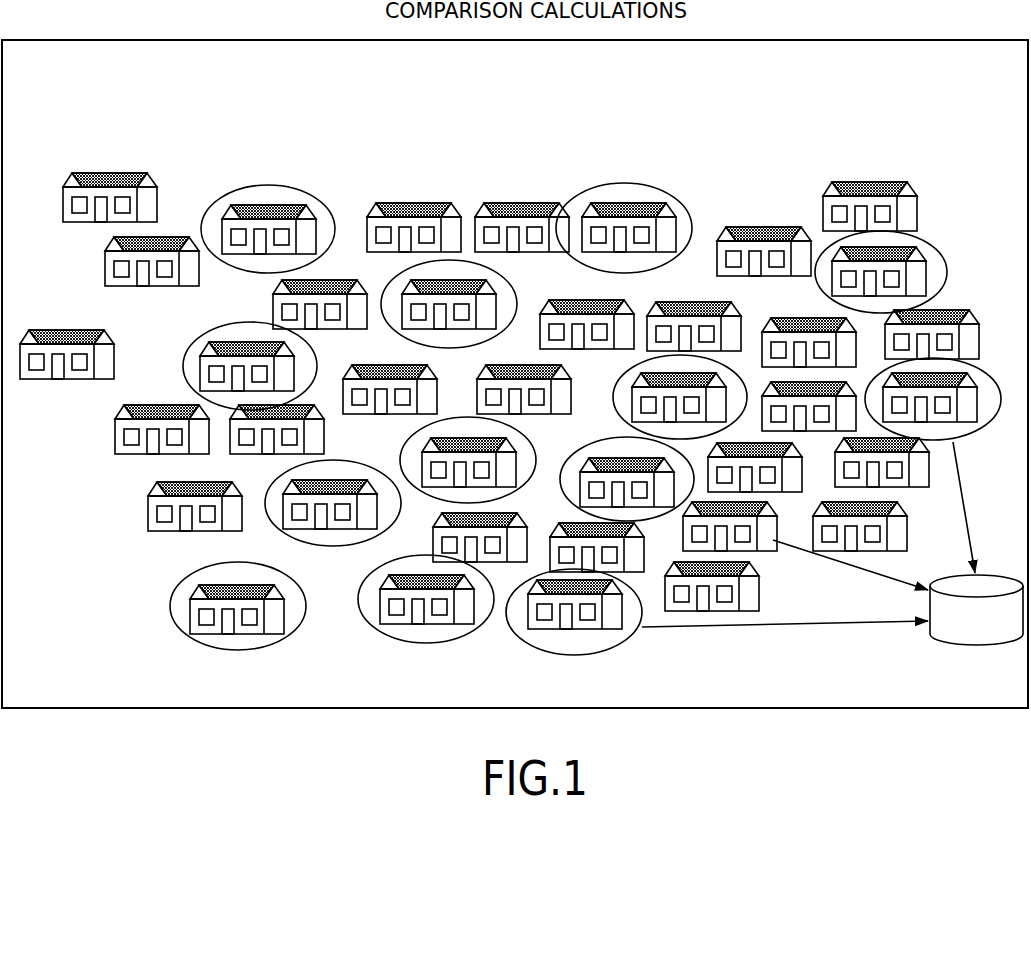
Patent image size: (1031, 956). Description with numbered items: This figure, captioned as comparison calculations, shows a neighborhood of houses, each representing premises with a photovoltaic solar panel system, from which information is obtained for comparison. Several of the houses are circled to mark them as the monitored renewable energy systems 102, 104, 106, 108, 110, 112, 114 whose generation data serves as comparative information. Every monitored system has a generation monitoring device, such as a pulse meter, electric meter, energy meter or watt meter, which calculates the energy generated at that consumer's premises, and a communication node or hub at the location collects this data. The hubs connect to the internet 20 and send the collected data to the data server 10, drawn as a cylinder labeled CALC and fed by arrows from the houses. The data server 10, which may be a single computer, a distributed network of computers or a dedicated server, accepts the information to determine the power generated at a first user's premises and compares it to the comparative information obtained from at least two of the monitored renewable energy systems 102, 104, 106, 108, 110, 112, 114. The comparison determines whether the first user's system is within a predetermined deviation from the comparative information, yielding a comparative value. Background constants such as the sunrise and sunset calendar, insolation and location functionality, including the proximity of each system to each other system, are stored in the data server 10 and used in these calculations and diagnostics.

The data server 10 is at (1012, 575).
The internet 20 is at (878, 622).
The monitored renewable energy system 102 is at (535, 446).
The monitored renewable energy system 104 is at (467, 260).
The monitored renewable energy system 106 is at (668, 197).
The monitored renewable energy system 108 is at (742, 372).
The monitored renewable energy system 110 is at (947, 268).
The monitored renewable energy system 112 is at (213, 330).
The monitored renewable energy system 114 is at (278, 185).